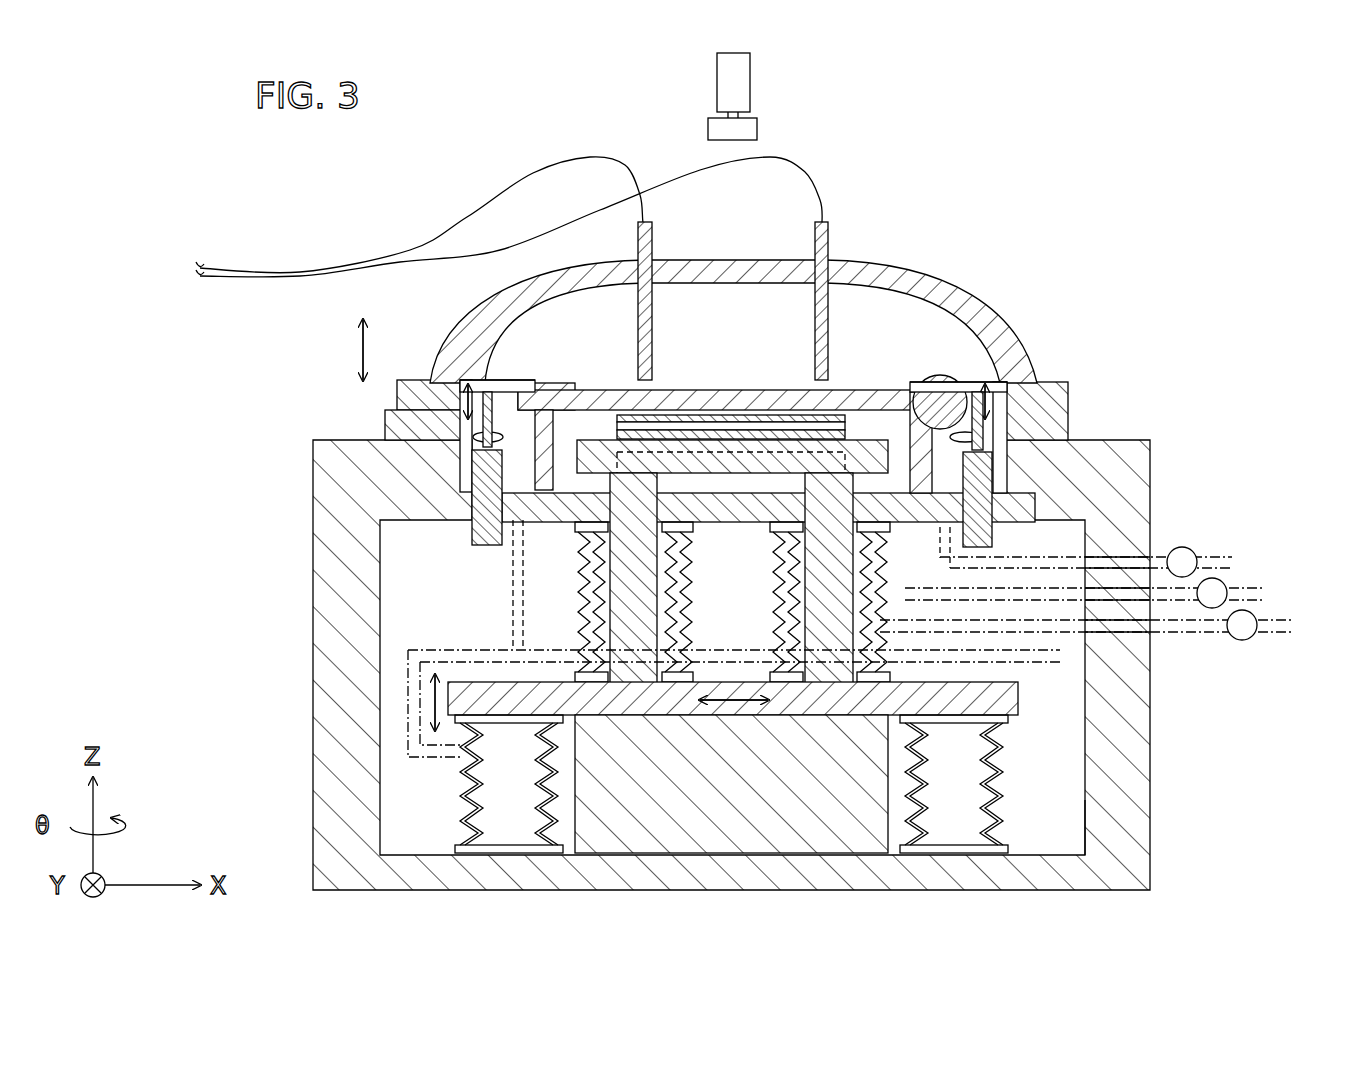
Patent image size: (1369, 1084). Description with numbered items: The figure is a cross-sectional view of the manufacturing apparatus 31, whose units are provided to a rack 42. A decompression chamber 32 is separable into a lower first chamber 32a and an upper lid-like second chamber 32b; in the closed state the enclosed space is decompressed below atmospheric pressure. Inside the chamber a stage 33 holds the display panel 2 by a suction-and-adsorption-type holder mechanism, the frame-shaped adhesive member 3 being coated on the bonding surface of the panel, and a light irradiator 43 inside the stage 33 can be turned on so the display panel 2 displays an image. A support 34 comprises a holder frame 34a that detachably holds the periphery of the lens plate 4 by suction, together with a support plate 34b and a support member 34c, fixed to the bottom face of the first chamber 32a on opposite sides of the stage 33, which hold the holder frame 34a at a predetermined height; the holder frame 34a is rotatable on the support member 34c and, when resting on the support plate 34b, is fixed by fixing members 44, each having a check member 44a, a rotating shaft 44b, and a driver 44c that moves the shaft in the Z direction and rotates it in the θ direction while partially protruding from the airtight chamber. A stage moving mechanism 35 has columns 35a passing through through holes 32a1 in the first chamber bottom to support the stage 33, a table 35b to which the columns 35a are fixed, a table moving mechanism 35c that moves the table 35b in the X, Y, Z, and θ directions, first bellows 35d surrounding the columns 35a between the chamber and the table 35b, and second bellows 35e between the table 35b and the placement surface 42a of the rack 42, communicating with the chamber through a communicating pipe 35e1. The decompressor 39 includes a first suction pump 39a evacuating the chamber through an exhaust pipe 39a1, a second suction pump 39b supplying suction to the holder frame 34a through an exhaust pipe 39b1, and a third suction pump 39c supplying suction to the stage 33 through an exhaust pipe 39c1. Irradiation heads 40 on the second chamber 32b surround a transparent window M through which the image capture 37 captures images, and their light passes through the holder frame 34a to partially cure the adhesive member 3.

The display panel 2 is at (740, 422).
The adhesive member 3 is at (645, 415).
The lens plate 4 is at (785, 430).
The manufacturing apparatus 31 is at (1118, 160).
The decompression chamber 32 is at (1060, 360).
The first chamber 32a is at (1065, 430).
The through holes 32a1 is at (540, 540).
The second chamber 32b is at (1010, 330).
The stage 33 is at (590, 440).
The support 34 is at (505, 335).
The holder frame 34a is at (695, 392).
The support plate 34b is at (545, 410).
The support member 34c is at (942, 342).
The stage moving mechanism 35 is at (736, 713).
The columns 35a is at (665, 590).
The table 35b is at (1020, 700).
The table moving mechanism 35c is at (735, 840).
The first bellows 35d is at (668, 640).
The second bellows 35e is at (460, 800).
The communicating pipe 35e1 is at (440, 640).
The image capture 37 is at (752, 80).
The decompressor 39 is at (1172, 548).
The first suction pump 39a is at (1195, 556).
The second suction pump 39b is at (1225, 588).
The third suction pump 39c is at (1255, 620).
The exhaust pipe 39a1 is at (1100, 565).
The exhaust pipe 39b1 is at (1100, 598).
The exhaust pipe 39c1 is at (1100, 630).
The irradiation heads 40 is at (655, 240).
The rack 42 is at (1082, 827).
The placement surface 42a is at (1083, 843).
The light irradiator 43 is at (865, 405).
The fixing members 44 is at (460, 425).
The check member 44a is at (480, 380).
The rotating shaft 44b is at (485, 392).
The driver 44c is at (475, 535).
The window M is at (775, 262).